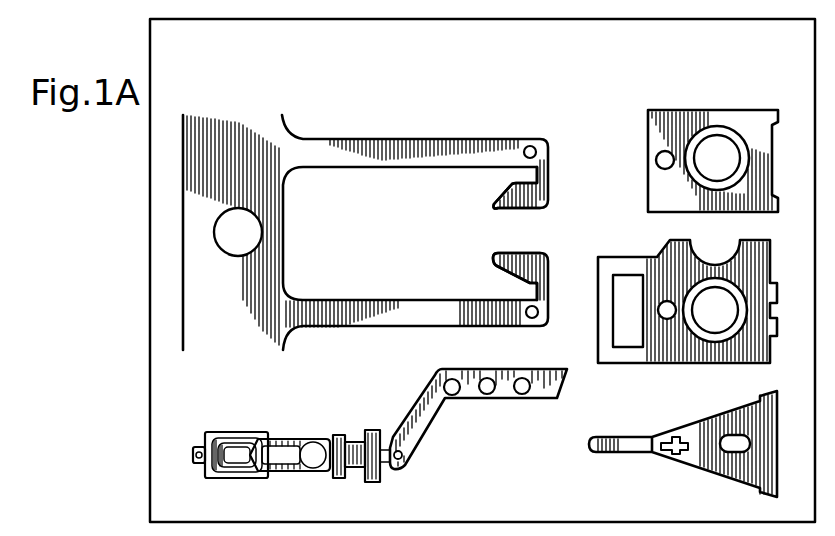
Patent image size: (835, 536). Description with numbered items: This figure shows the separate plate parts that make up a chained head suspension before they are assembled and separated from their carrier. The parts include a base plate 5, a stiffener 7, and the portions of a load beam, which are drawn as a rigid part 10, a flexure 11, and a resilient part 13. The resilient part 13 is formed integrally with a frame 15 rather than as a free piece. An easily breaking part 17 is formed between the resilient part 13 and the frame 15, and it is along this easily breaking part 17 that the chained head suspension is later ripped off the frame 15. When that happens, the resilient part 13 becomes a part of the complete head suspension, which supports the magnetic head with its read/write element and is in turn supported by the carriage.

The frame 15 is at (342, 139).
The easily breaking part 17 is at (543, 141).
The resilient part 13 is at (500, 203).
The flexure 11 is at (468, 400).
The base plate 5 is at (677, 110).
The stiffener 7 is at (614, 257).
The rigid part 10 is at (683, 427).